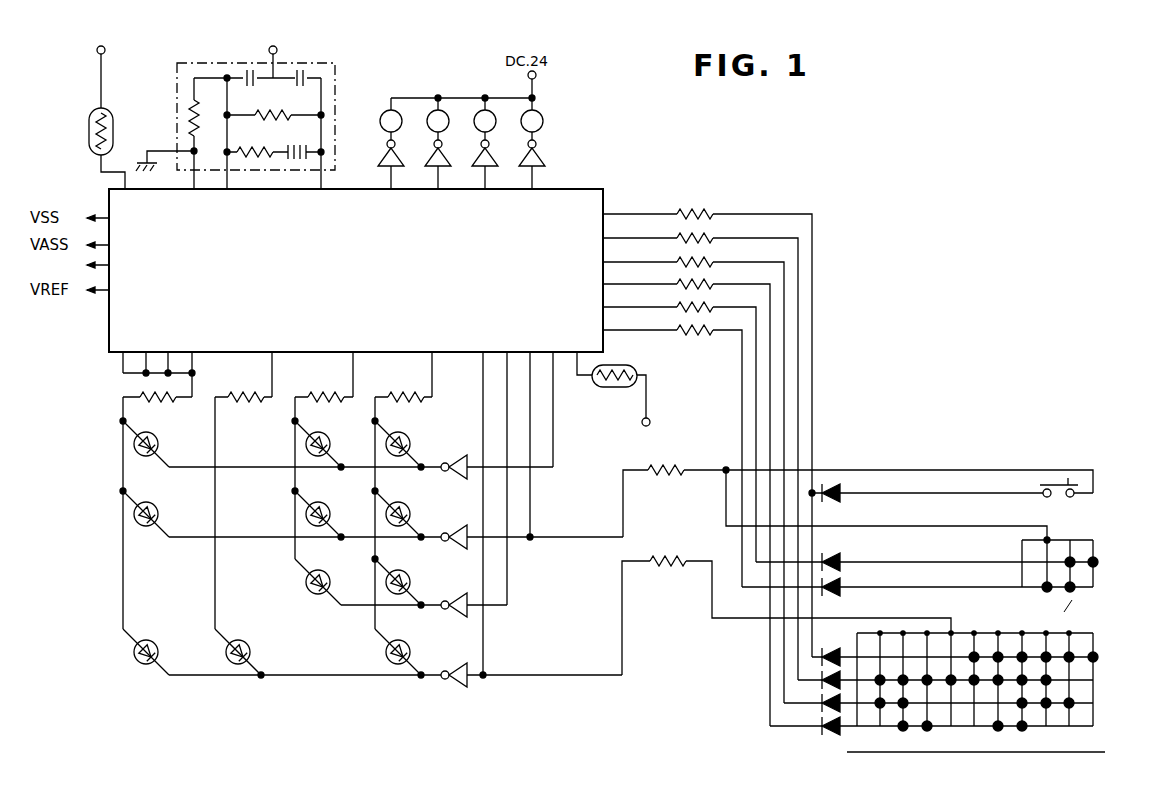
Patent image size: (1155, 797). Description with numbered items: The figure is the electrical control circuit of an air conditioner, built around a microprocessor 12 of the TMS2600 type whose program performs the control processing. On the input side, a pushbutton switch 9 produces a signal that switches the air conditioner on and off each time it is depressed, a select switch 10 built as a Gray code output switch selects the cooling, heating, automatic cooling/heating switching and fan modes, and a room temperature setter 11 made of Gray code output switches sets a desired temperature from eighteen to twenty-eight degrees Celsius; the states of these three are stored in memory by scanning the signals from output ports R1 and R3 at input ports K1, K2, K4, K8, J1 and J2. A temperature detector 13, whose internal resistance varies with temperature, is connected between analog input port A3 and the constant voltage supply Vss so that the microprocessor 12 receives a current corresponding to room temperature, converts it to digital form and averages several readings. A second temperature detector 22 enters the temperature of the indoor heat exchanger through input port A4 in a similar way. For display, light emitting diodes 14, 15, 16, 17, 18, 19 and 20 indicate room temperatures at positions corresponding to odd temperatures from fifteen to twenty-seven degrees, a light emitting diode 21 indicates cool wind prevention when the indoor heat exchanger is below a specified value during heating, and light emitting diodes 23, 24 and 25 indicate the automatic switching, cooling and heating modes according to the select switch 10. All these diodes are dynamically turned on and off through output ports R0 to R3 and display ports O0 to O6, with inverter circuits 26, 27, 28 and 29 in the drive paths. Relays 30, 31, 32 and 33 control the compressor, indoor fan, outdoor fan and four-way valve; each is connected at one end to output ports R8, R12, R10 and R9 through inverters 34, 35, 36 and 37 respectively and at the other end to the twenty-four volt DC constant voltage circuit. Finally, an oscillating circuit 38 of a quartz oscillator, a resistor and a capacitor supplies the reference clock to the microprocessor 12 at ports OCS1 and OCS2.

The pushbutton switch 9 is at (1068, 478).
The select switch 10 is at (1093, 541).
The room temperature setter 11 is at (1093, 634).
The microprocessor 12 is at (109, 322).
The temperature detector 13 is at (614, 389).
The light emitting diode 14 is at (409, 438).
The light emitting diode 15 is at (329, 436).
The light emitting diode 16 is at (409, 508).
The light emitting diode 17 is at (329, 506).
The light emitting diode 18 is at (409, 578).
The light emitting diode 19 is at (329, 575).
The light emitting diode 20 is at (409, 645).
The light emitting diode 21 is at (249, 645).
The temperature detector 22 is at (89, 132).
The light emitting diode 23 is at (157, 436).
The light emitting diode 24 is at (157, 506).
The light emitting diode 25 is at (157, 645).
The inverter circuit 26 is at (462, 458).
The inverter circuit 27 is at (462, 528).
The inverter circuit 28 is at (462, 597).
The inverter circuit 29 is at (462, 667).
The relay 30 is at (544, 119).
The relay 31 is at (477, 110).
The relay 32 is at (430, 110).
The relay 33 is at (383, 110).
The inverter 34 is at (521, 160).
The inverter 35 is at (474, 160).
The inverter 36 is at (427, 160).
The inverter 37 is at (380, 160).
The oscillating circuit 38 is at (333, 63).